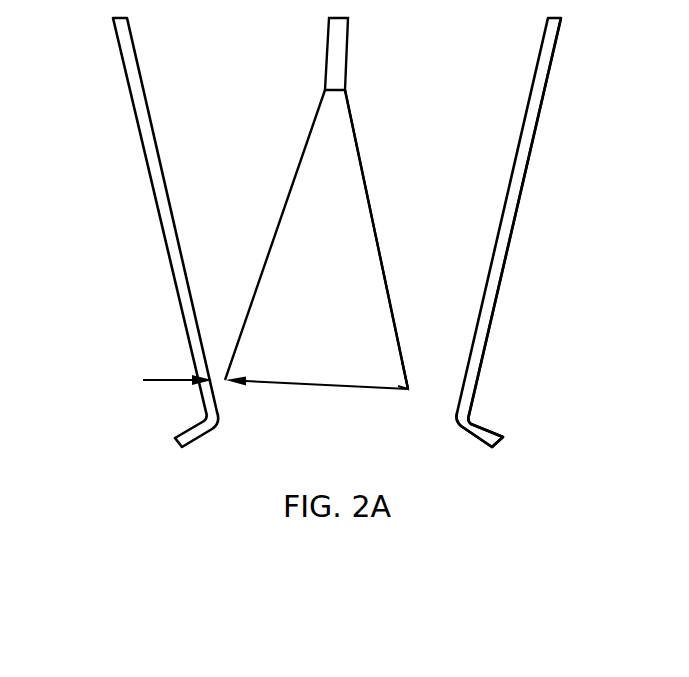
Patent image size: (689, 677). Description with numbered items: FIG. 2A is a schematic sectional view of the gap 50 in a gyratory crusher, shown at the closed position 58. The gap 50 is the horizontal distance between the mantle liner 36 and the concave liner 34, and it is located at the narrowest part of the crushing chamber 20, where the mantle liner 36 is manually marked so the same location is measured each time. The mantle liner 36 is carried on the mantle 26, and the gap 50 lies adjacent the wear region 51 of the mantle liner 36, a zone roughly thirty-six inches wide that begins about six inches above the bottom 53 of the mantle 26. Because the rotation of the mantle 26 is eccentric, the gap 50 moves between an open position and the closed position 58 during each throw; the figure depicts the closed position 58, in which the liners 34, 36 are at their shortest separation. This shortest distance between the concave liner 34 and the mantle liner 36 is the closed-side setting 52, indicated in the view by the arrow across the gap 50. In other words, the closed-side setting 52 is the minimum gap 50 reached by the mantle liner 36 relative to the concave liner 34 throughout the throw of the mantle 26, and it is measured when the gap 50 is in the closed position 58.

The crushing chamber 20 is at (467, 240).
The mantle 26 is at (333, 163).
The concave liner 34 is at (485, 314).
The mantle liner 36 is at (371, 215).
The gap 50 is at (440, 387).
The wear region 51 is at (408, 389).
The closed-side setting 52 is at (167, 378).
The bottom of the mantle 53 is at (312, 385).
The closed position 58 is at (100, 227).